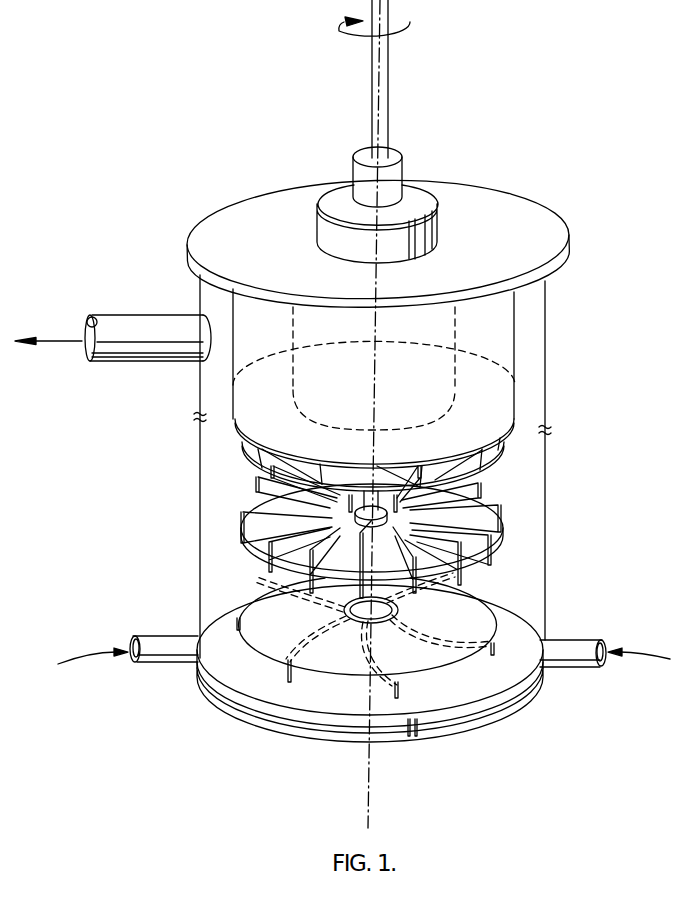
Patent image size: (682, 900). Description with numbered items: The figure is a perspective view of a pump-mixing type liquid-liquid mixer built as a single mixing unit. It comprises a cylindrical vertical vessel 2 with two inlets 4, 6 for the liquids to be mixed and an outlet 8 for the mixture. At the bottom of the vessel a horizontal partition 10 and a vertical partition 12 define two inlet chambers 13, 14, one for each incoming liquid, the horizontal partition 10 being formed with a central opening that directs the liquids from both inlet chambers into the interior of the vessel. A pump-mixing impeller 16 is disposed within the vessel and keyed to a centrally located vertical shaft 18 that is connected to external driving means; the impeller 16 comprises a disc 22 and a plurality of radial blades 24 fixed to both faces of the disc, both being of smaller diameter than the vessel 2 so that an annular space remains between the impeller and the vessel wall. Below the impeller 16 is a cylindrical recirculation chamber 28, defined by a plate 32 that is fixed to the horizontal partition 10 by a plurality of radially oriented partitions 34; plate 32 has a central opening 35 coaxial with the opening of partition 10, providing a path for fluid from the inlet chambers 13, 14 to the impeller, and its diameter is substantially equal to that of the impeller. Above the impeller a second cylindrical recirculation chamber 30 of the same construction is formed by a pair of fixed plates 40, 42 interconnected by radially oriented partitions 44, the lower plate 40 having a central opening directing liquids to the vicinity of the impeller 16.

The cylindrical vertical vessel 2 is at (546, 502).
The inlet 4 is at (153, 660).
The inlet 6 is at (577, 667).
The outlet 8 is at (122, 323).
The horizontal partition 10 is at (436, 700).
The vertical partition 12 is at (397, 729).
The inlet chamber 13 is at (223, 686).
The inlet chamber 14 is at (500, 701).
The pump-mixing impeller 16 is at (224, 530).
The vertical shaft 18 is at (388, 93).
The disc 22 is at (243, 551).
The radial blades 24 is at (258, 483).
The lower cylindrical recirculation chamber 28 is at (222, 616).
The upper cylindrical recirculation chamber 30 is at (222, 430).
The plate 32 is at (420, 665).
The radially oriented partitions 34 is at (388, 690).
The central opening 35 is at (392, 612).
The lower plate 40 is at (247, 447).
The upper plate 42 is at (497, 388).
The radially oriented partitions 44 is at (480, 455).